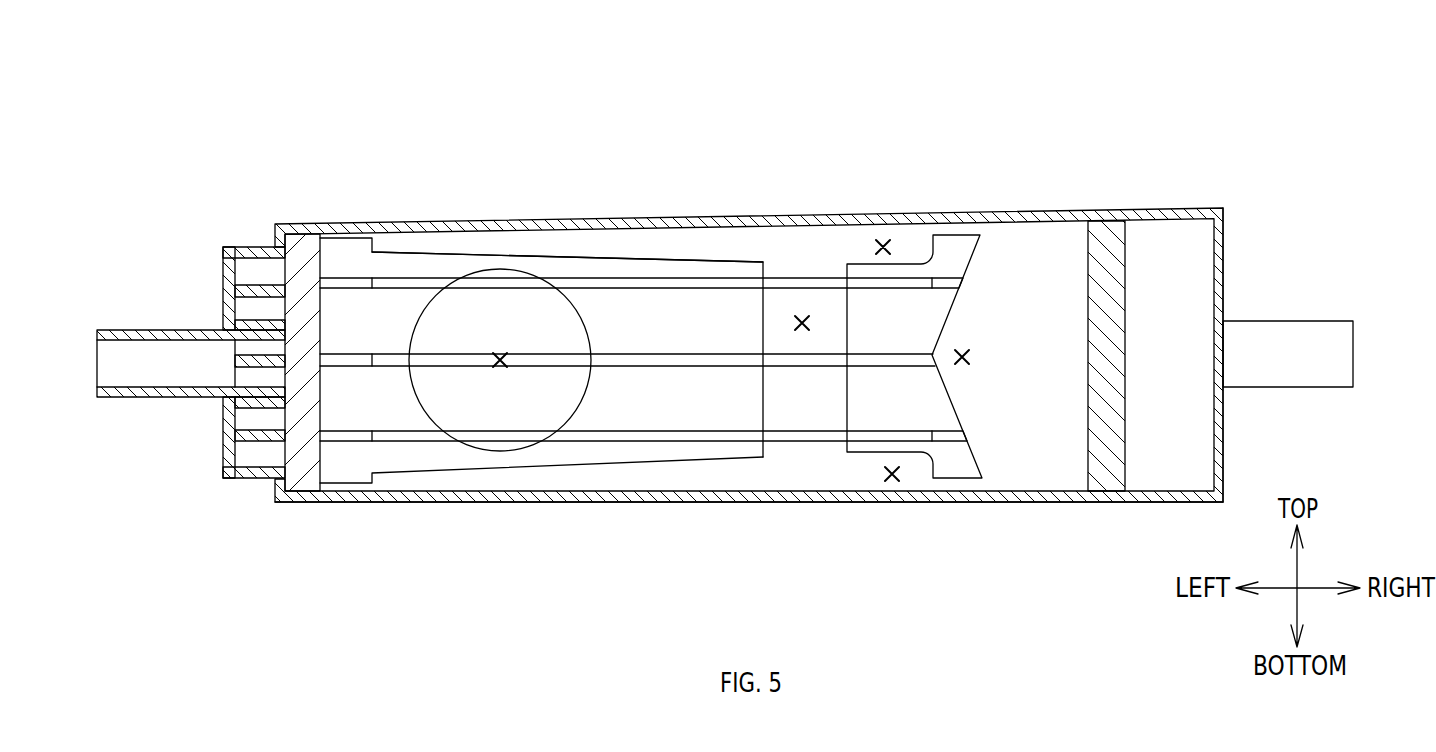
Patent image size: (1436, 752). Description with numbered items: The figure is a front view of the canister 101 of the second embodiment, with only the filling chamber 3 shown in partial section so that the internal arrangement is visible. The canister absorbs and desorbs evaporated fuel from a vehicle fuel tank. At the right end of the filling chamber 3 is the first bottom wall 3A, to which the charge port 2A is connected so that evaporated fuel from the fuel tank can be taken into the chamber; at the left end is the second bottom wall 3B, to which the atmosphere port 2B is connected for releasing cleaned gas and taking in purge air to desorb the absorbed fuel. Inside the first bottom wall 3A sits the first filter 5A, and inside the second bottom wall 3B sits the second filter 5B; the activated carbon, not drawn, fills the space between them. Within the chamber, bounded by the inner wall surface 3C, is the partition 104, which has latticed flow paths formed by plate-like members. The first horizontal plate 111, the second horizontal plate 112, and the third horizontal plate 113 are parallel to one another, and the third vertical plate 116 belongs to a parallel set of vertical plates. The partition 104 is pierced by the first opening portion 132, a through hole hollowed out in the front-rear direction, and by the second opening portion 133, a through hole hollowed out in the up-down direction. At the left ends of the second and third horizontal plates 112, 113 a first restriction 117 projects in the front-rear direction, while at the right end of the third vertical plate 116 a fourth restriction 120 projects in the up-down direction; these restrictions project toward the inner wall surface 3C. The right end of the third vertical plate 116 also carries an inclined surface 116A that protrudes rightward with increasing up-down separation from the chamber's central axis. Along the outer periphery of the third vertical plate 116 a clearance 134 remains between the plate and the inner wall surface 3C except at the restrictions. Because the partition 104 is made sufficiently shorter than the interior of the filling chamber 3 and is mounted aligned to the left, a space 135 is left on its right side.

The canister 101 is at (1282, 160).
The charge port 2A is at (1322, 333).
The atmosphere port 2B is at (137, 335).
The filling chamber 3 is at (932, 194).
The first bottom wall 3A is at (1218, 253).
The second bottom wall 3B is at (222, 284).
The inner wall surface 3C is at (782, 492).
The first filter 5A is at (1108, 230).
The second filter 5B is at (302, 252).
The partition 104 is at (721, 245).
The first horizontal plate 111 is at (638, 283).
The second horizontal plate 112 is at (607, 363).
The third horizontal plate 113 is at (673, 436).
The third vertical plate 116 is at (388, 262).
The inclined surface 116A is at (953, 398).
The first restriction 117 is at (342, 286).
The fourth restriction 120 is at (951, 244).
The first opening portion 132 is at (502, 352).
The second opening portion 133 is at (802, 318).
The clearance 134 is at (881, 241).
The space 135 is at (963, 352).